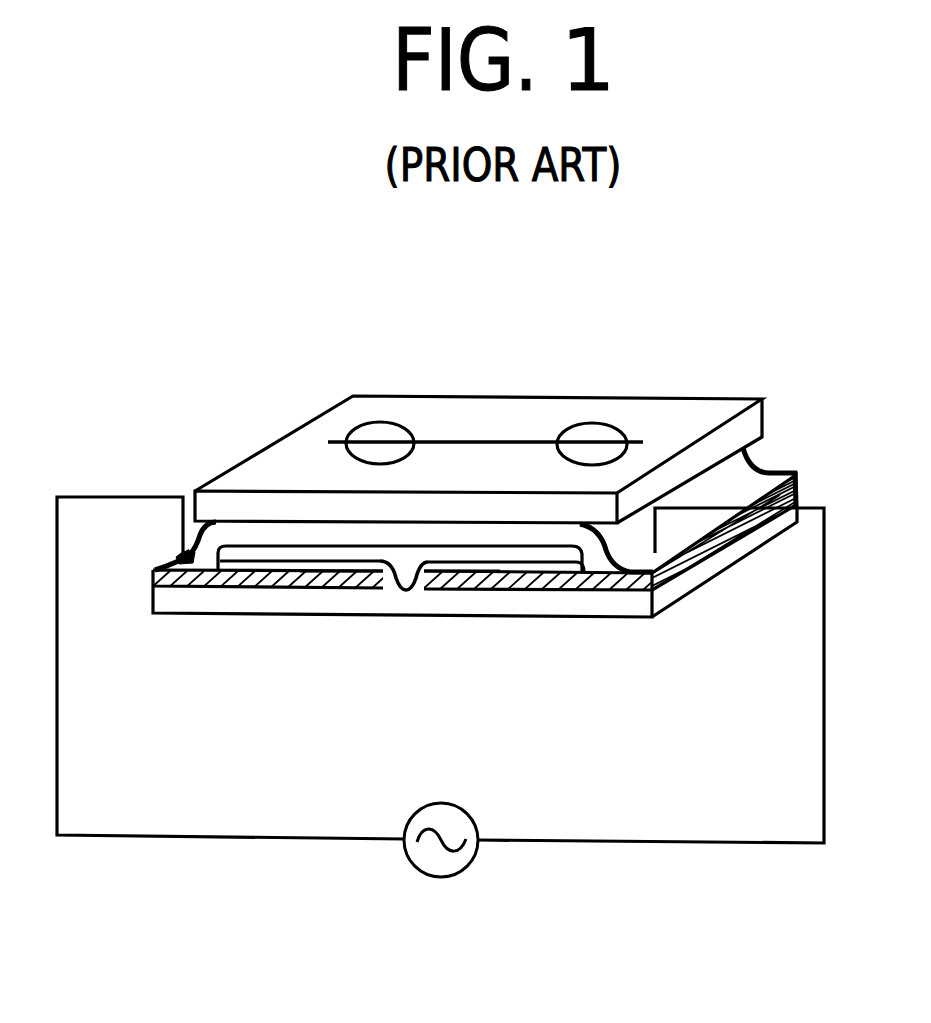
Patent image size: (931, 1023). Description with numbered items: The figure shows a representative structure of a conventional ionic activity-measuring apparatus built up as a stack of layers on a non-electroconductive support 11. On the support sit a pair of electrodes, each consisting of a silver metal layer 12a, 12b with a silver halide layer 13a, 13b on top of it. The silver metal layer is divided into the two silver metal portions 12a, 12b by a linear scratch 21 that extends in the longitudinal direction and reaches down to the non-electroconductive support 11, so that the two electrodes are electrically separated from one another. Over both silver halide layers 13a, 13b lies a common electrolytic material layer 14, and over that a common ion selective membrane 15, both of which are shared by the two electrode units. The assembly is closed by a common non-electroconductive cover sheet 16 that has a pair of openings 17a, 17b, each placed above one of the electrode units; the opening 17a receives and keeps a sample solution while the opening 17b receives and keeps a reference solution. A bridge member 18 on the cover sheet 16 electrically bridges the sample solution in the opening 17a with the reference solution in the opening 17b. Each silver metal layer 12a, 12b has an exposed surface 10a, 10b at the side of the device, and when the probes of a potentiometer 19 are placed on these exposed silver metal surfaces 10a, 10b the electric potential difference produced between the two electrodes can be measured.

The exposed surface 10a is at (182, 556).
The exposed surface 10b is at (727, 523).
The non-electroconductive support 11 is at (309, 603).
The silver metal layer 12a is at (173, 580).
The silver metal layer 12b is at (618, 589).
The silver halide layer 13a is at (364, 570).
The silver halide layer 13b is at (465, 590).
The common electrolytic material layer 14 is at (282, 553).
The common ion selective membrane 15 is at (243, 533).
The common non-electroconductive cover sheet 16 is at (345, 415).
The opening 17a is at (387, 425).
The opening 17b is at (597, 428).
The bridge member 18 is at (490, 440).
The potentiometer 19 is at (470, 817).
The linear scratch 21 is at (408, 598).